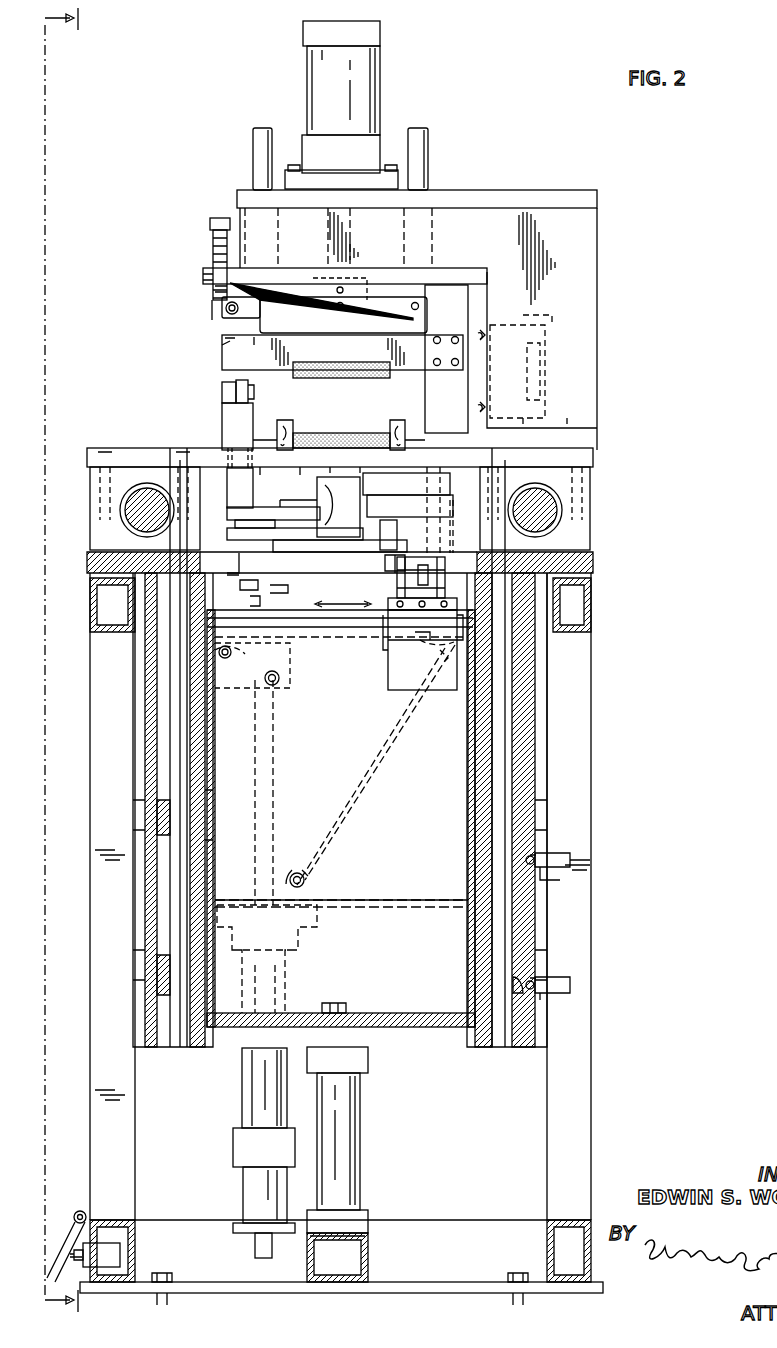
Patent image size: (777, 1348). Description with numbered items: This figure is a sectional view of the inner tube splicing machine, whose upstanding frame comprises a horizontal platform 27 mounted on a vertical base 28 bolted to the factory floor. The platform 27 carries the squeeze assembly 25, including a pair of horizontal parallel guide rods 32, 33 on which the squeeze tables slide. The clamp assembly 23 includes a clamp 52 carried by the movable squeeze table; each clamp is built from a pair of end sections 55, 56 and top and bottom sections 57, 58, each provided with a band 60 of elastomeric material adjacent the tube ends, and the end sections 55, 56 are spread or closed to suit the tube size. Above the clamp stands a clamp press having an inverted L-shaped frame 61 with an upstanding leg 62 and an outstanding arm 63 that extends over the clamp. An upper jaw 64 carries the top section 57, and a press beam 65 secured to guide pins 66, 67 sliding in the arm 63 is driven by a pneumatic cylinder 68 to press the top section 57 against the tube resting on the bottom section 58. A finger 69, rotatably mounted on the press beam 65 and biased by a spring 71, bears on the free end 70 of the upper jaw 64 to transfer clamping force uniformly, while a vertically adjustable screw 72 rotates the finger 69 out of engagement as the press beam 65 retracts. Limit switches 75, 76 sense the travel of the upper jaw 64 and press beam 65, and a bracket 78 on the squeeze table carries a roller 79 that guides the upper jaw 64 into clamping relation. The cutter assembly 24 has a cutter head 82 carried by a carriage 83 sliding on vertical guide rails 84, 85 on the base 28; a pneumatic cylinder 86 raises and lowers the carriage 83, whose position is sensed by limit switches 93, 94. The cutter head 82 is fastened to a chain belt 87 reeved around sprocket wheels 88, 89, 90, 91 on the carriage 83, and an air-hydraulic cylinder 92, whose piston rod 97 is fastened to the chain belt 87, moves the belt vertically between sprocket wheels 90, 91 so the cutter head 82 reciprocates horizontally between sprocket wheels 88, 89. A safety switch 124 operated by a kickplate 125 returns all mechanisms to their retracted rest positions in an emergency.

The clamp assembly 23 is at (538, 184).
The cutter assembly 24 is at (521, 705).
The squeeze assembly 25 is at (476, 492).
The platform 27 is at (594, 560).
The base 28 is at (594, 1006).
The guide rod 32 is at (551, 504).
The guide rod 33 is at (126, 511).
The clamp 52 is at (398, 420).
The end section 55 is at (410, 428).
The end section 56 is at (287, 422).
The top section 57 is at (320, 368).
The bottom section 58 is at (322, 464).
The band 60 is at (324, 434).
The L-shaped frame 61 is at (598, 266).
The upstanding leg 62 is at (590, 346).
The outstanding arm 63 is at (456, 210).
The upper jaw 64 is at (252, 346).
The press beam 65 is at (291, 318).
The guide pin 66 is at (420, 128).
The guide pin 67 is at (258, 140).
The pneumatic cylinder 68 is at (380, 70).
The finger 69 is at (225, 326).
The free end 70 is at (226, 344).
The spring 71 is at (212, 294).
The screw 72 is at (212, 234).
The limit switch 75 is at (482, 330).
The limit switch 76 is at (482, 408).
The bracket 78 is at (230, 466).
The roller 79 is at (221, 387).
The cutter head 82 is at (394, 594).
The carriage 83 is at (414, 1014).
The guide rail 84 is at (345, 818).
The guide rail 85 is at (212, 878).
The pneumatic cylinder 86 is at (362, 1150).
The chain belt 87 is at (344, 644).
The sprocket wheel 88 is at (442, 658).
The sprocket wheel 89 is at (258, 658).
The sprocket wheel 90 is at (268, 682).
The sprocket wheel 91 is at (298, 872).
The air-hydraulic cylinder 92 is at (241, 1050).
The limit switch 93 is at (536, 982).
The limit switch 94 is at (536, 856).
The piston rod 97 is at (254, 780).
The safety switch 124 is at (98, 1244).
The kickplate 125 is at (61, 1215).